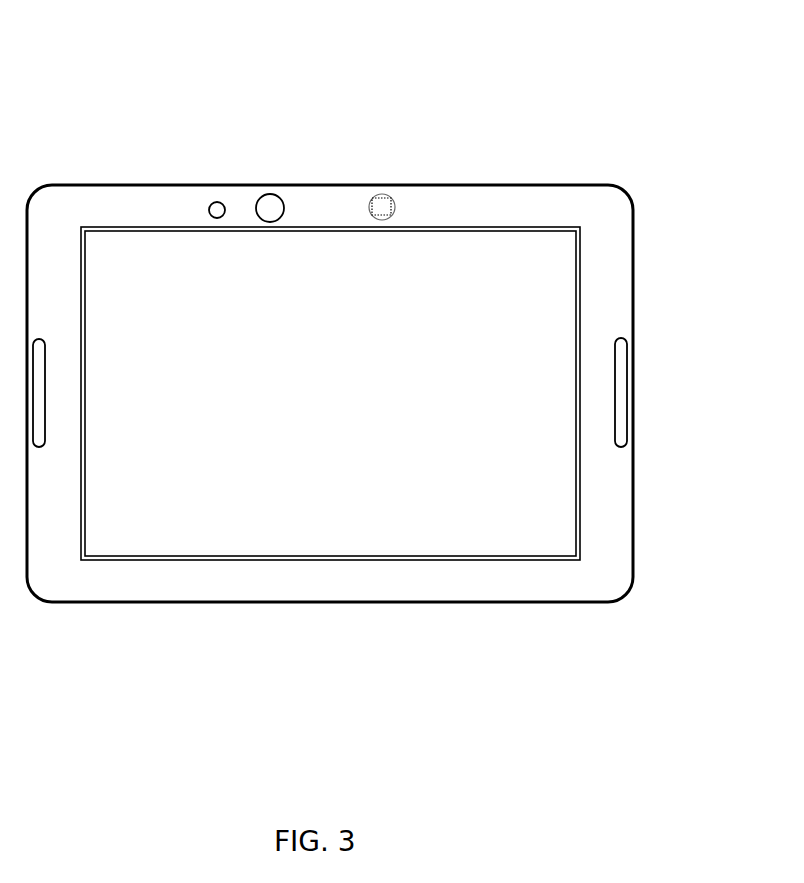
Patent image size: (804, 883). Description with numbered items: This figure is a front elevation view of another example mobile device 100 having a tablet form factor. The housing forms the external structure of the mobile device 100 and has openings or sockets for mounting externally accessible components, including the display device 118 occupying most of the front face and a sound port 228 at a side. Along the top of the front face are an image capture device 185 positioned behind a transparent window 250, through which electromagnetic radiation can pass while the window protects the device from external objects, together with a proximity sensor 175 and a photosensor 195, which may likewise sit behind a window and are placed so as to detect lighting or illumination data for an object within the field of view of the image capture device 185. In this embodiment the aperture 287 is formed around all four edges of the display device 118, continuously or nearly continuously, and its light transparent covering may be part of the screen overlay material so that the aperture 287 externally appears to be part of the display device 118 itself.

The mobile device 100 is at (509, 53).
The display device 118 is at (510, 485).
The aperture 287 is at (578, 303).
The sound port 228 is at (623, 388).
The photosensor 195 is at (211, 203).
The proximity sensor 175 is at (270, 200).
The image capture device 185 is at (389, 198).
The transparent window 250 is at (383, 210).